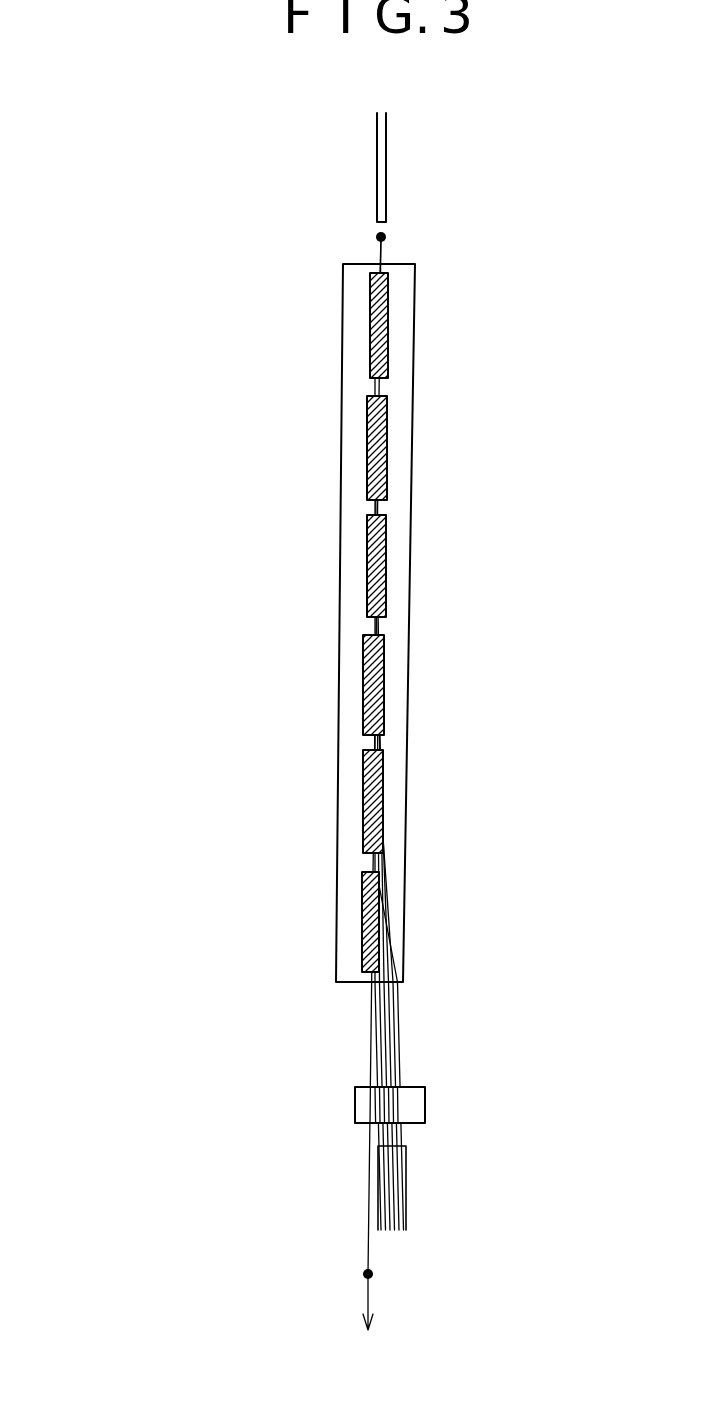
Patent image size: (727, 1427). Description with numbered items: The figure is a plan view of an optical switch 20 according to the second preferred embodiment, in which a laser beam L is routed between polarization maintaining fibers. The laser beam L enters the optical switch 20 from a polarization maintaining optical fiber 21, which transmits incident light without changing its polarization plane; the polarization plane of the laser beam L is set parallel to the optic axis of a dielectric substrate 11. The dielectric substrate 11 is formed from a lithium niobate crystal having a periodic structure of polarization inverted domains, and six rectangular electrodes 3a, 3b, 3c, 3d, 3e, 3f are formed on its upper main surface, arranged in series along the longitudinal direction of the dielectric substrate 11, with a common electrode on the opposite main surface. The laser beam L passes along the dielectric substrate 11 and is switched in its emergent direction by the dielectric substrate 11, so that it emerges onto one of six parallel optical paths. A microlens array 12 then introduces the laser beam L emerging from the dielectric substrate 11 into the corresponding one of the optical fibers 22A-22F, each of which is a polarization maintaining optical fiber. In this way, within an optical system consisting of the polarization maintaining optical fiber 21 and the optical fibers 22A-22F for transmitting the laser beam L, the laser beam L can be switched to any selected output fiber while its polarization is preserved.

The rectangular electrode 3a is at (370, 348).
The rectangular electrode 3b is at (367, 452).
The rectangular electrode 3c is at (367, 558).
The rectangular electrode 3d is at (363, 692).
The rectangular electrode 3e is at (363, 795).
The rectangular electrode 3f is at (362, 912).
The dielectric substrate 11 is at (403, 775).
The microlens array 12 is at (415, 1102).
The optical switch 20 is at (140, 1146).
The polarization maintaining optical fiber 21 is at (386, 171).
The optical fibers 22A-22F is at (414, 1188).
The laser beam L is at (383, 257).